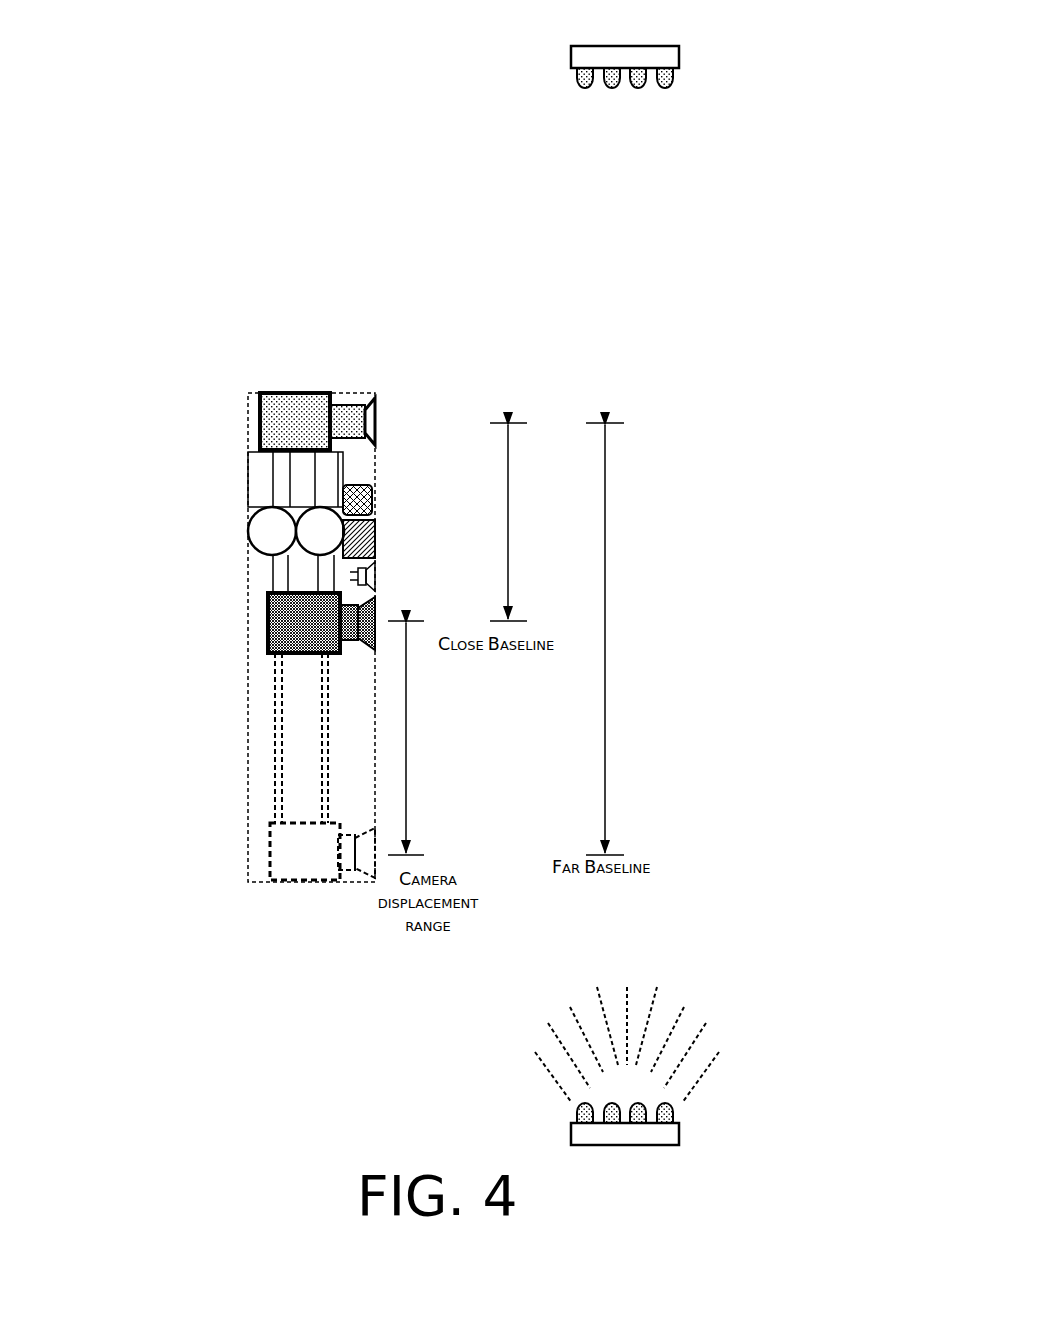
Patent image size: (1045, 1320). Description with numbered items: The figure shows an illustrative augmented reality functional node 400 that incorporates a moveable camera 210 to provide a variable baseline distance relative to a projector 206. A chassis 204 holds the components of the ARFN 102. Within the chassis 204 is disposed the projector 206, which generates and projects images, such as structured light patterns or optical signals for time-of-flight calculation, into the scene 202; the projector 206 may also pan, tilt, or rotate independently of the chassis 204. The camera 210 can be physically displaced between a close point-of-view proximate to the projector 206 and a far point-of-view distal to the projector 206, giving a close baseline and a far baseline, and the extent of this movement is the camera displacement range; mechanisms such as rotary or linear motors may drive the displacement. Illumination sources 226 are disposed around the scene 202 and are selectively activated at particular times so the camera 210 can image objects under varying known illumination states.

The augmented reality functional node 400 is at (720, 38).
The ARFN 102 is at (242, 540).
The chassis 204 is at (313, 395).
The projector 206 is at (295, 423).
The camera 210 is at (228, 711).
The scene 202 is at (776, 557).
The illumination sources 226 is at (598, 1135).